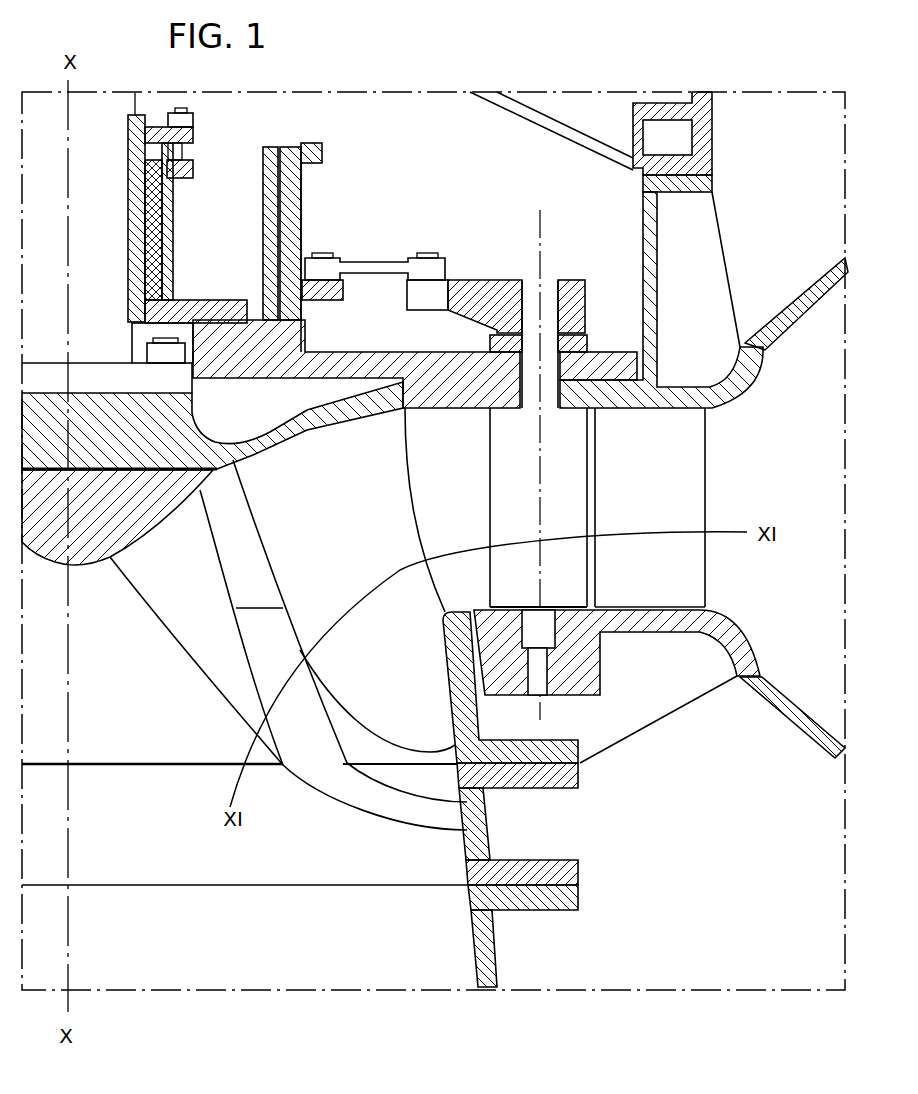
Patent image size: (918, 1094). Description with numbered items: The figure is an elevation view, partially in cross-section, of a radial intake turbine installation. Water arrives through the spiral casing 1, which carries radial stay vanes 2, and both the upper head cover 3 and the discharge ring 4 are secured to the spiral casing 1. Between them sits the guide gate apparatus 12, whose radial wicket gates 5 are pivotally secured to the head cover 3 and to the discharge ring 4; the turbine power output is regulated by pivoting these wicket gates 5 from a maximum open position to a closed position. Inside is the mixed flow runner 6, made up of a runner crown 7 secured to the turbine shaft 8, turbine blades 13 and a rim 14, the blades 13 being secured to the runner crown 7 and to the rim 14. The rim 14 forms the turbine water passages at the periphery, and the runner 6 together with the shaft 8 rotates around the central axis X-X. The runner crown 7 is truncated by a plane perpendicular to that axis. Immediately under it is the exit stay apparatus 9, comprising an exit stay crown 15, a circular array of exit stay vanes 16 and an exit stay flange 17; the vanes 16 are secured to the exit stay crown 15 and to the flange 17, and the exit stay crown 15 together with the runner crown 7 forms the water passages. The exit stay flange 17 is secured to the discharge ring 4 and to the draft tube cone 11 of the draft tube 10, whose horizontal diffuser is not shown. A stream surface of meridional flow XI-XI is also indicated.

The spiral casing 1 is at (818, 453).
The radial stay vanes 2 is at (633, 502).
The upper head cover 3 is at (463, 382).
The discharge ring 4 is at (628, 692).
The radial wicket gates 5 is at (489, 490).
The mixed flow runner 6 is at (235, 563).
The runner crown 7 is at (135, 448).
The turbine shaft 8 is at (99, 257).
The exit stay apparatus 9 is at (147, 677).
The draft tube 10 is at (161, 927).
The draft tube cone 11 is at (494, 932).
The guide gate apparatus 12 is at (451, 455).
The turbine blades 13 is at (406, 528).
The rim 14 is at (455, 708).
The exit stay crown 15 is at (98, 520).
The exit stay vanes 16 is at (244, 706).
The exit stay flange 17 is at (477, 857).